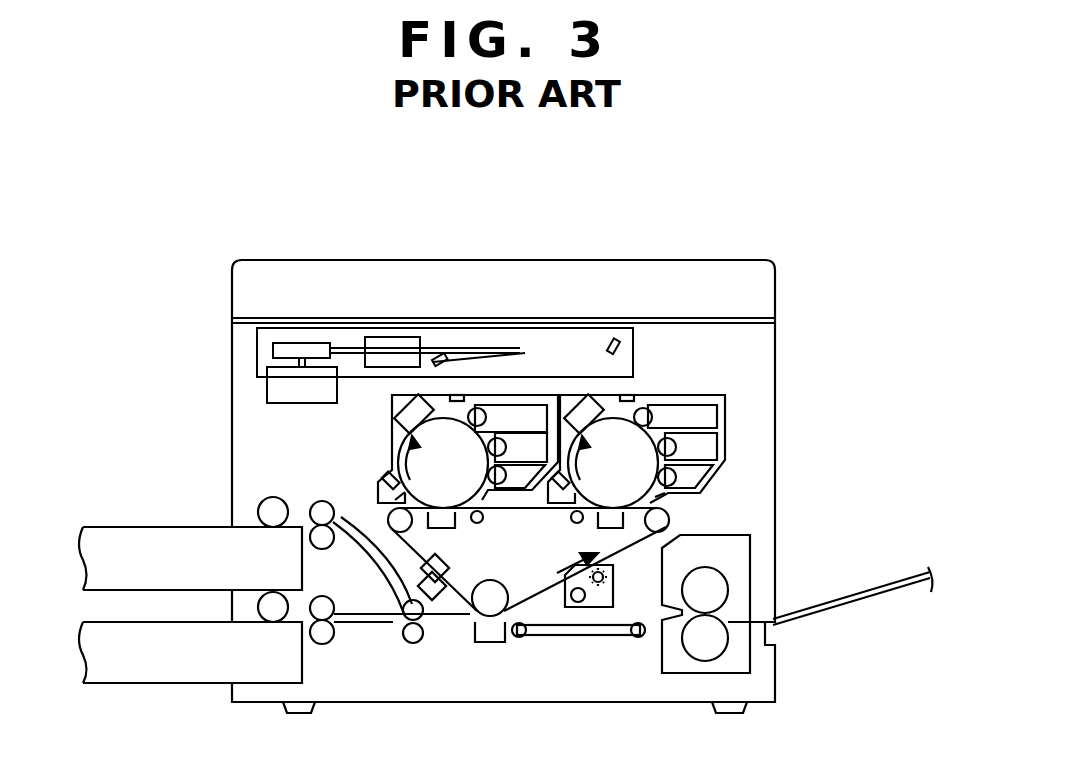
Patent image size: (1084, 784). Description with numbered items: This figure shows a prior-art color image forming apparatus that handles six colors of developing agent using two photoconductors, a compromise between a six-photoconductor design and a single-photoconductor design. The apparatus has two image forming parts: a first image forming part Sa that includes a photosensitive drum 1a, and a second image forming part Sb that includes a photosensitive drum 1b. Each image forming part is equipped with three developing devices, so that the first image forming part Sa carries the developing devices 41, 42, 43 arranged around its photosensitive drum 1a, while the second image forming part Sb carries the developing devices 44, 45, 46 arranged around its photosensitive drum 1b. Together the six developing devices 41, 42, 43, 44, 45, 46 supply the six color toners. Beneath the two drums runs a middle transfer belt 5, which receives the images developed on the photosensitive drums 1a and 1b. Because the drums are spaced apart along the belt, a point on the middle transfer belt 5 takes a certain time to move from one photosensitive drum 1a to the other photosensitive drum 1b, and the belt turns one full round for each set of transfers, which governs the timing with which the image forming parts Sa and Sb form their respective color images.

The photosensitive drum 1a is at (623, 395).
The photosensitive drum 1b is at (392, 458).
The middle transfer belt 5 is at (535, 592).
The developing device 41 is at (730, 420).
The developing device 42 is at (717, 450).
The developing device 43 is at (717, 475).
The developing device 44 is at (512, 432).
The developing device 45 is at (522, 445).
The developing device 46 is at (540, 462).
The image forming part Sa is at (730, 405).
The image forming part Sb is at (392, 402).